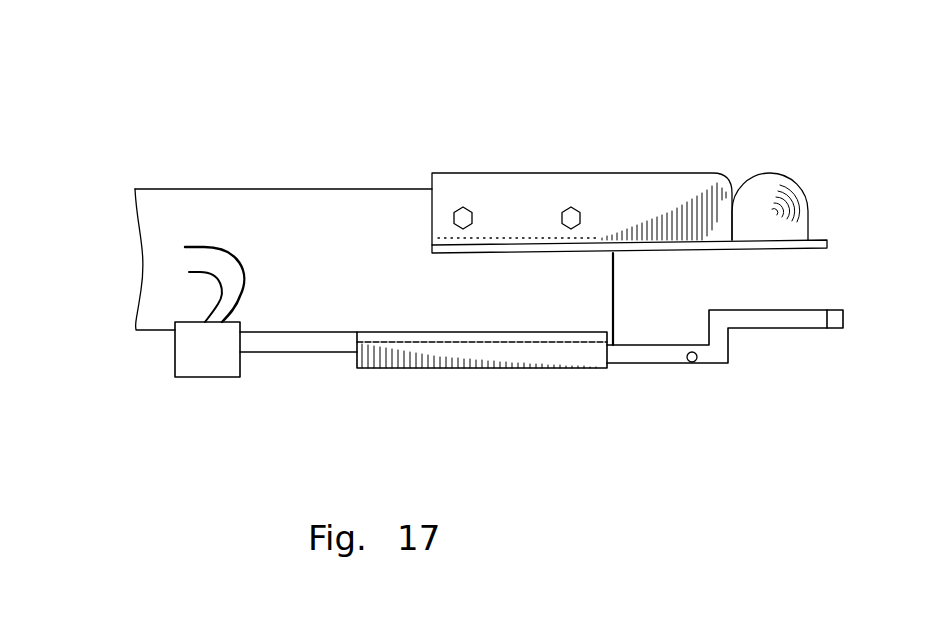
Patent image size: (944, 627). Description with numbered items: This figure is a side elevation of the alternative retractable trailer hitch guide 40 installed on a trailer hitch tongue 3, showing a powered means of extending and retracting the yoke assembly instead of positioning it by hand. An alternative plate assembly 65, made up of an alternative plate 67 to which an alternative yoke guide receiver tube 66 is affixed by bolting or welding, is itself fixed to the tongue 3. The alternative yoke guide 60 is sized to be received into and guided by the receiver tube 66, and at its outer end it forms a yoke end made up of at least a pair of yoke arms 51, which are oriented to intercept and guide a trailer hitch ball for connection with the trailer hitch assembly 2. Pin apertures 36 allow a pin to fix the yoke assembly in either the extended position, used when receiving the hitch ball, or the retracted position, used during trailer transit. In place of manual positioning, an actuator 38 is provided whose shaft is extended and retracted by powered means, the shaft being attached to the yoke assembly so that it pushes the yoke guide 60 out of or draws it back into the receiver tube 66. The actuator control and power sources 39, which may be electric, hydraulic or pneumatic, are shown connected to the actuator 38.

The trailer hitch assembly 2 is at (652, 128).
The trailer hitch tongue 3 is at (213, 203).
The pin apertures 36 is at (690, 363).
The actuator 38 is at (188, 366).
The actuator control and power sources 39 is at (187, 248).
The alternative retractable trailer hitch guide 40 is at (388, 400).
The yoke arms 51 is at (788, 320).
The alternative yoke guide 60 is at (638, 363).
The alternative plate assembly 65 is at (486, 378).
The alternative yoke guide receiver tube 66 is at (531, 355).
The alternative plate 67 is at (373, 332).